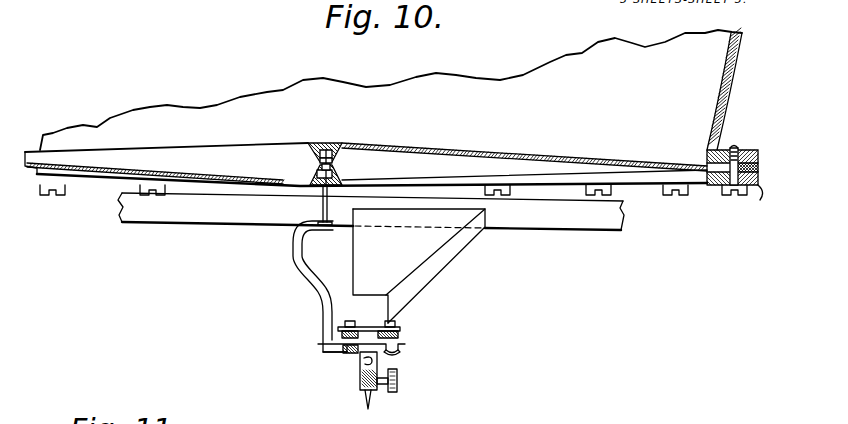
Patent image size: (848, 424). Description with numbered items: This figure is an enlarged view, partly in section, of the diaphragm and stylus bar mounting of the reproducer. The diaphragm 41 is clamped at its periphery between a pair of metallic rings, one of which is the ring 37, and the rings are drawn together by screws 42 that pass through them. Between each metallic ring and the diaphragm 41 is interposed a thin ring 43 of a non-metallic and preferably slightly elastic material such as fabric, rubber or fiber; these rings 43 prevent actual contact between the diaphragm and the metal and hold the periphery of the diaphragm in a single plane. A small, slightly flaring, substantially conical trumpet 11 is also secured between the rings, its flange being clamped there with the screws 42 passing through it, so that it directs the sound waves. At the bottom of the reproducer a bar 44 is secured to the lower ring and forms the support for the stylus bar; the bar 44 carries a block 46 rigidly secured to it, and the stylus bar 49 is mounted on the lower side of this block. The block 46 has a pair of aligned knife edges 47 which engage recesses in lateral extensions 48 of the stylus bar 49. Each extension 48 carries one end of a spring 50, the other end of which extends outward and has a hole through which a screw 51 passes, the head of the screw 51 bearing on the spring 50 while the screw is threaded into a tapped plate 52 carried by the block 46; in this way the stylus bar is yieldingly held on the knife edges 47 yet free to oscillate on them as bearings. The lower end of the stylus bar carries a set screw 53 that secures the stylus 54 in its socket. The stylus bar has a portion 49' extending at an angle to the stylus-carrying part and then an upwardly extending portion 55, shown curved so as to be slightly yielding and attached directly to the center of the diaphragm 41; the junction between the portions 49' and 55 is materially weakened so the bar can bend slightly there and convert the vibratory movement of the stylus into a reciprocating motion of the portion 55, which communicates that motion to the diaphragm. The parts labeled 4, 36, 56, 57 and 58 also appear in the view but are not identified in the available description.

The base plate 4 is at (180, 147).
The trumpet 11 is at (612, 62).
The end bracket 36 is at (758, 192).
The ring 37 is at (758, 140).
The diaphragm 41 is at (405, 168).
The screws 42 is at (63, 191).
The thin rings 43 is at (760, 163).
The bar 44 is at (589, 221).
The block 46 is at (450, 256).
The knife edges 47 is at (385, 322).
The lateral extensions 48 is at (358, 349).
The stylus bar 49 is at (332, 386).
The angled portion of stylus bar 49' is at (317, 365).
The spring 50 is at (400, 342).
The screw 51 is at (398, 352).
The tapped plate 52 is at (400, 324).
The set screw 53 is at (397, 382).
The stylus 54 is at (369, 393).
The upwardly extending portion 55 is at (317, 302).
The rod 56 is at (323, 214).
The nut 57 is at (336, 173).
The pivot clamp 58 is at (323, 145).